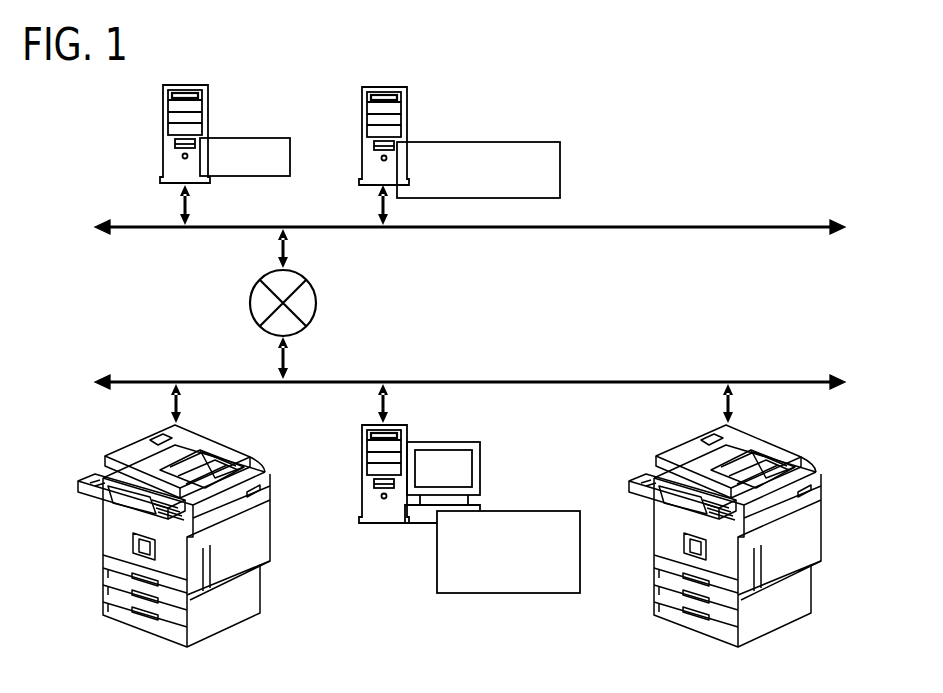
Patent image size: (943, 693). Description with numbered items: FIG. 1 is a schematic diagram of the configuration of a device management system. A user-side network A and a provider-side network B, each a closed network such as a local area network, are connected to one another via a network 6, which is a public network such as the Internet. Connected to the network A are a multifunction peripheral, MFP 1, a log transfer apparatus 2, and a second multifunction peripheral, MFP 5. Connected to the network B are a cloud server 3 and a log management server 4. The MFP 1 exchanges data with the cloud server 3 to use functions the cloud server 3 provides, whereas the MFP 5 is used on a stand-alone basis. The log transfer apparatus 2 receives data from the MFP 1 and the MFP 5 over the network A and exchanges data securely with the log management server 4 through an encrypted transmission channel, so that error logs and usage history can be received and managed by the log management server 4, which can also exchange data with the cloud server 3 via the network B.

The multifunction peripheral (MFP) 1 is at (255, 463).
The log transfer apparatus 2 is at (462, 441).
The cloud server 3 is at (195, 85).
The log management server 4 is at (394, 87).
The MFP 5 is at (806, 463).
The network 6 is at (316, 303).
The network A is at (775, 382).
The network B is at (775, 227).